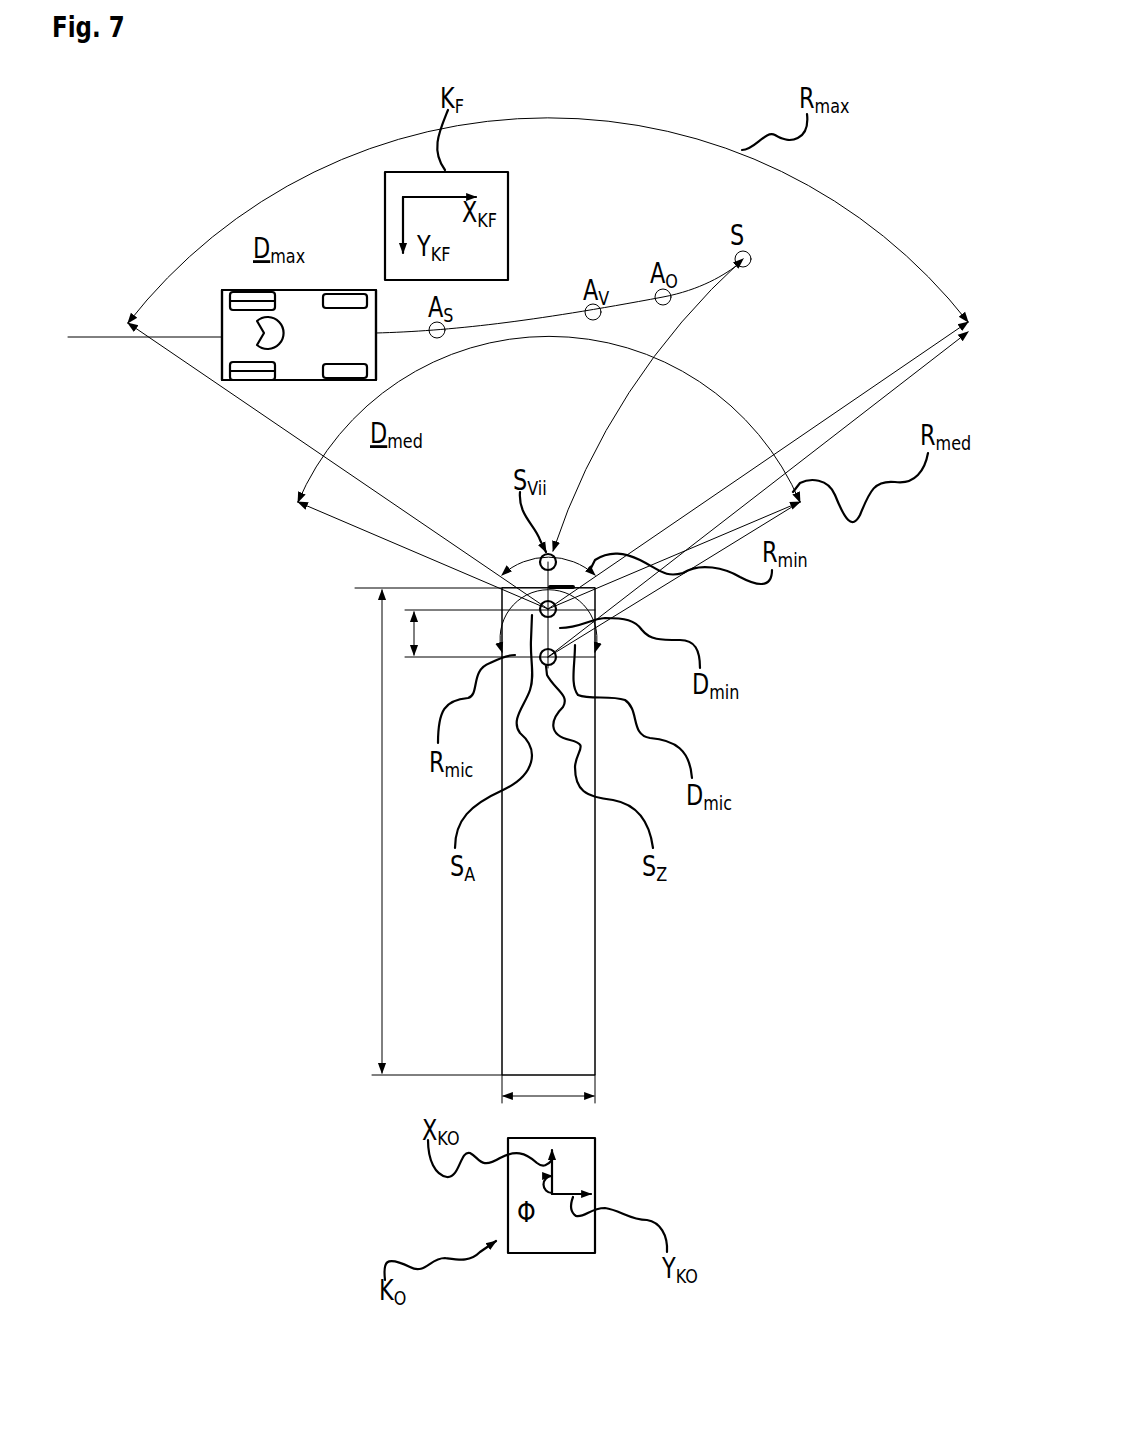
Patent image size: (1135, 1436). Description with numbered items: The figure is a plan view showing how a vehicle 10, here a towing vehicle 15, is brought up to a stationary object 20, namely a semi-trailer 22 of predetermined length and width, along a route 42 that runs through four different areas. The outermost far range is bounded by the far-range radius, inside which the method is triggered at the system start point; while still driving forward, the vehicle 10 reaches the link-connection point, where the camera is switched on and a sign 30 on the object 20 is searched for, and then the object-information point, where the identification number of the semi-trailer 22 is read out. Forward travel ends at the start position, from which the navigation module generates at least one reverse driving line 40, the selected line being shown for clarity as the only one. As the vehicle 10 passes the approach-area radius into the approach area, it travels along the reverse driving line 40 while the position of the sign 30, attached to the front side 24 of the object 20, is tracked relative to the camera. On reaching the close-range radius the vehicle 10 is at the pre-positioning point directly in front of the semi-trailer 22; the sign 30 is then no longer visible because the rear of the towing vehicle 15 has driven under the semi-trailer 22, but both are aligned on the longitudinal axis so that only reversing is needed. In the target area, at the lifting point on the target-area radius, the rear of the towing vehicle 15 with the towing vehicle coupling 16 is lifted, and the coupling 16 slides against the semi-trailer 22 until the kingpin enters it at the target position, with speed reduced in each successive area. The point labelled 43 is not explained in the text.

The vehicle 10 is at (299, 233).
The towing vehicle 15 is at (276, 420).
The towing vehicle coupling 16 is at (195, 284).
The route 42 is at (404, 364).
The reverse driving line 40 is at (745, 359).
The object 20 is at (534, 845).
The semi-trailer 22 is at (548, 831).
The front side 24 is at (506, 526).
The sign 30 is at (577, 551).
The trailer reference point 43 is at (639, 623).